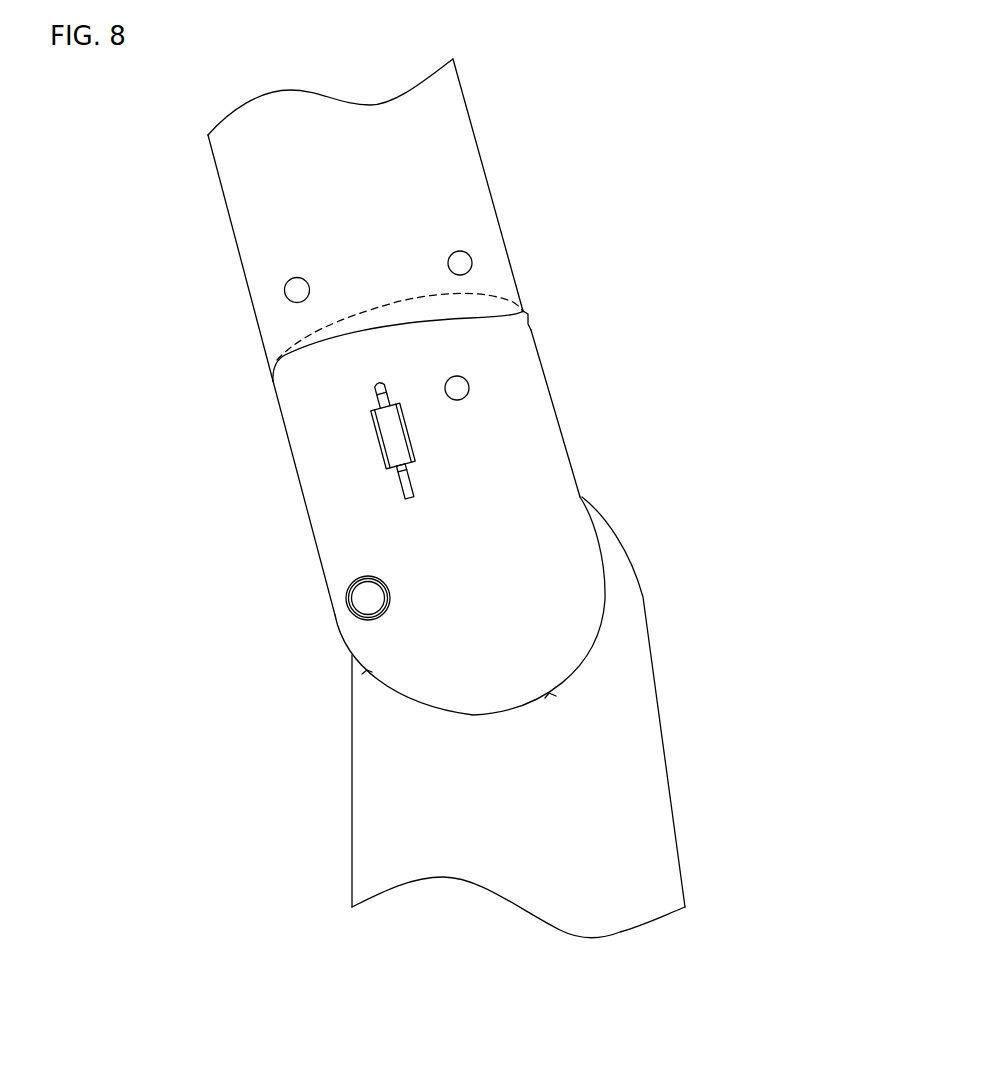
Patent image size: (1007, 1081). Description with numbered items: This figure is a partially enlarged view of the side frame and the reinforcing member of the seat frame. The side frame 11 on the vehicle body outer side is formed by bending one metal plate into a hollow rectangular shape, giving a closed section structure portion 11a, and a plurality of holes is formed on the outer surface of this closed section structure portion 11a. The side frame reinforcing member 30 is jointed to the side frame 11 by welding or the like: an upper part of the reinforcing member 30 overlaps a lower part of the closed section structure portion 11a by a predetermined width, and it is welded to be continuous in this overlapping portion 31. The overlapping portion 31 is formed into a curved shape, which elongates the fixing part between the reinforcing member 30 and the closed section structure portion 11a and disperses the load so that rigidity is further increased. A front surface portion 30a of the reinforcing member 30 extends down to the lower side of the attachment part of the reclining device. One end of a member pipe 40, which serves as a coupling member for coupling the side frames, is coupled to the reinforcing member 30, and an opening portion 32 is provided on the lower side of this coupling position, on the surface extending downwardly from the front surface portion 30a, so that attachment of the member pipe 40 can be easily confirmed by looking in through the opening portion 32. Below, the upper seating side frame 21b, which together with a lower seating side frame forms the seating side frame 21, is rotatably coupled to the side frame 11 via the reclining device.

The side frame 11 is at (436, 220).
The closed section structure portion 11a is at (483, 170).
The seating side frame 21 is at (591, 717).
The upper seating side frame 21b is at (670, 803).
The side frame reinforcing member 30 is at (419, 538).
The front surface portion 30a is at (557, 410).
The overlapping portion 31 is at (310, 342).
The opening portion 32 is at (430, 713).
The member pipe 40 is at (364, 580).